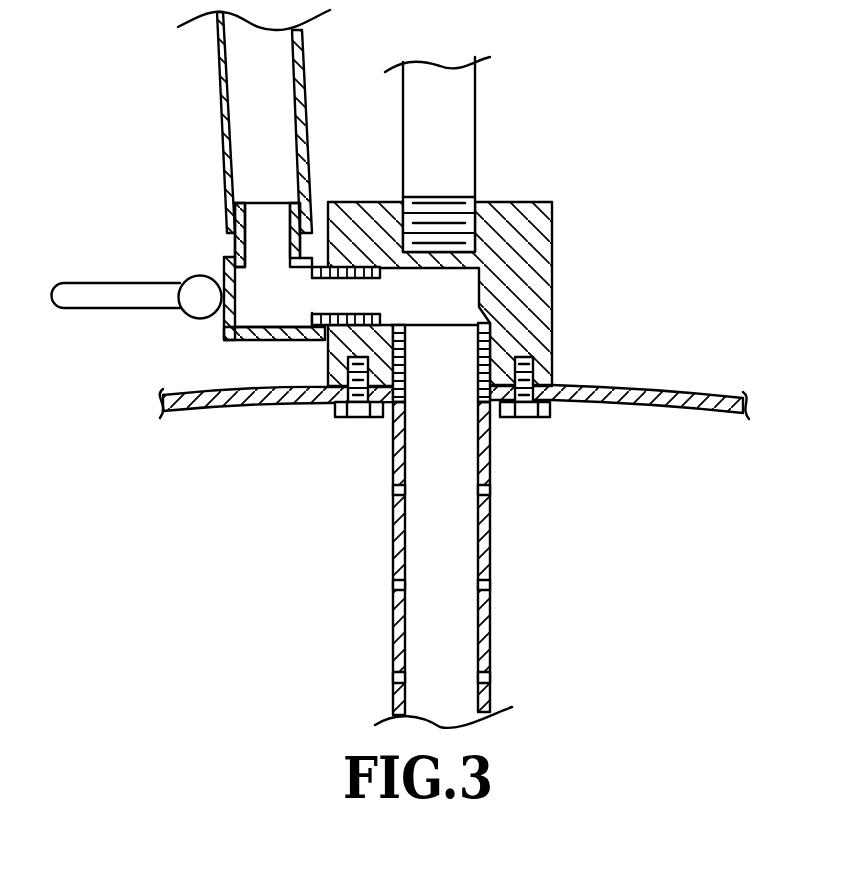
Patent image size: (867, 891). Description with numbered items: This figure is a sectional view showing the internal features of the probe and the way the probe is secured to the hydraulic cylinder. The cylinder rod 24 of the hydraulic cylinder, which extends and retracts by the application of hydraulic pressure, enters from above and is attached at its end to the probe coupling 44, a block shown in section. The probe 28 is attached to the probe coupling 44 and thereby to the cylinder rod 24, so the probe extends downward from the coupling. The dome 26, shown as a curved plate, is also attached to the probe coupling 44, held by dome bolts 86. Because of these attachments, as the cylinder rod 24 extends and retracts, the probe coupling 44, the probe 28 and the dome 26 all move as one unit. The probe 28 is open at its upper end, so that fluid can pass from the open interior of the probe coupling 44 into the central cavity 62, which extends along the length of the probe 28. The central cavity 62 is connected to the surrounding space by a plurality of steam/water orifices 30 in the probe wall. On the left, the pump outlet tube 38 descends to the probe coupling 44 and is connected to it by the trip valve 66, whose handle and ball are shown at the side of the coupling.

The cylinder rod 24 is at (452, 112).
The dome 26 is at (615, 388).
The probe 28 is at (490, 527).
The steam/water orifice 30 is at (393, 585).
The pump outlet tube 38 is at (223, 107).
The probe coupling 44 is at (532, 253).
The central cavity 62 is at (440, 450).
The trip valve 66 is at (222, 297).
The dome bolt 86 is at (545, 413).